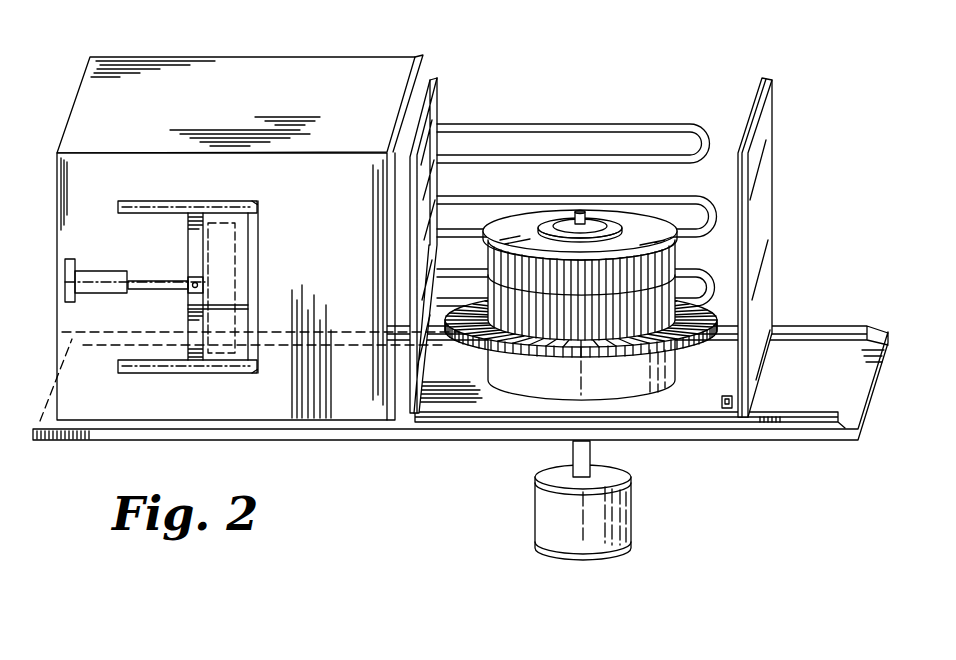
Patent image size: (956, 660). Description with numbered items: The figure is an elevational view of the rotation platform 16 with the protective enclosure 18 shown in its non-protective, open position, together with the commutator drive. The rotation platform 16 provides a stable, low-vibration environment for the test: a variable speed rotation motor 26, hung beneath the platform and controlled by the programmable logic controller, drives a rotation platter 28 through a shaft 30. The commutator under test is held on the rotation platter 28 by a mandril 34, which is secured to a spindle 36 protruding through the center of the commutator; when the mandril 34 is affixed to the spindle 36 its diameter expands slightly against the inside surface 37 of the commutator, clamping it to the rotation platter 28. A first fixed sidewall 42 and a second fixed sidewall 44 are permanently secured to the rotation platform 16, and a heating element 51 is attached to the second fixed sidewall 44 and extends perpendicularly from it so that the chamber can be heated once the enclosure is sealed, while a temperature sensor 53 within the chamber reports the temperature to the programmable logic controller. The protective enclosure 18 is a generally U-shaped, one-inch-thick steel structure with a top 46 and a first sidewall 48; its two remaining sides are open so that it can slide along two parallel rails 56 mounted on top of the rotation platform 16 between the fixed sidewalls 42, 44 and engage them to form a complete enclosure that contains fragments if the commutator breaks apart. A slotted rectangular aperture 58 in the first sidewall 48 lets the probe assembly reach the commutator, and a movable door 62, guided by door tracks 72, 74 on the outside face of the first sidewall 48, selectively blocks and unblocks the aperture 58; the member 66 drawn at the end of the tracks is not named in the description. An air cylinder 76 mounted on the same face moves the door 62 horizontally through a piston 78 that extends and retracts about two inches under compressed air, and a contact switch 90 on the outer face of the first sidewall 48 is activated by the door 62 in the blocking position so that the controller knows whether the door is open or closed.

The rotation platform 16 is at (512, 454).
The protective enclosure 18 is at (235, 217).
The variable speed rotation motor 26 is at (553, 528).
The rotation platter 28 is at (668, 372).
The shaft 30 is at (592, 448).
The mandril 34 is at (556, 222).
The spindle 36 is at (582, 210).
The inside surface 37 is at (609, 225).
The first fixed sidewall 42 is at (773, 105).
The second fixed sidewall 44 is at (440, 98).
The top 46 is at (106, 70).
The first sidewall 48 is at (83, 173).
The heating element 51 is at (547, 124).
The temperature sensor 53 is at (732, 414).
The rails 56 is at (830, 326).
The slotted rectangular aperture 58 is at (224, 225).
The movable door 62 is at (200, 210).
The end plate 66 is at (259, 213).
The door track 72 is at (157, 200).
The door track 74 is at (134, 375).
The air cylinder 76 is at (98, 278).
The piston 78 is at (167, 279).
The contact switch 90 is at (180, 352).